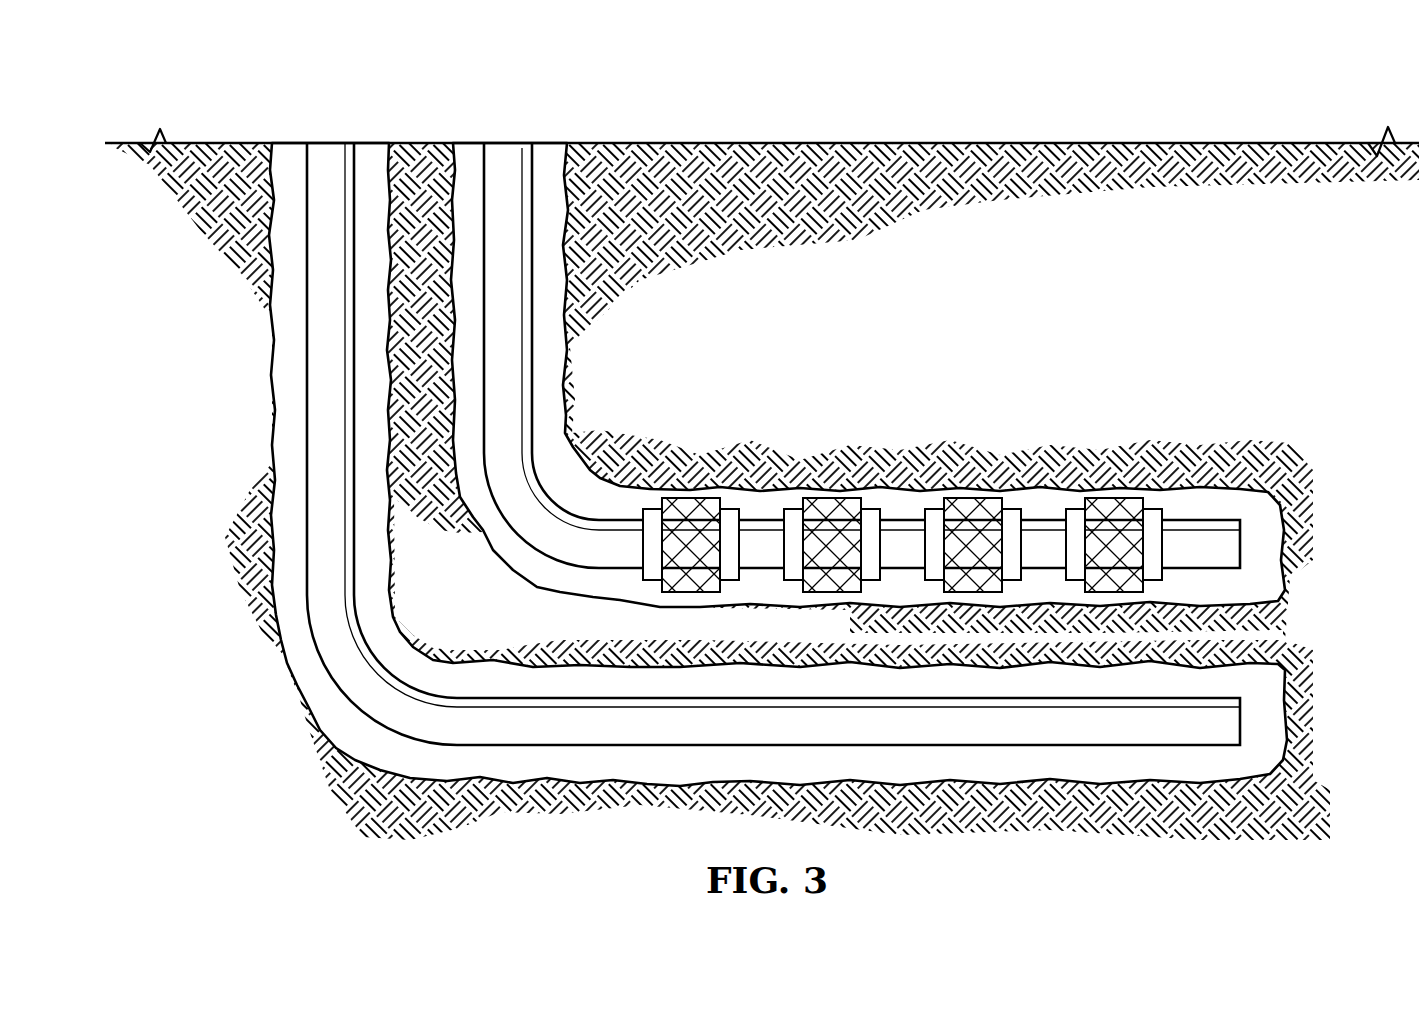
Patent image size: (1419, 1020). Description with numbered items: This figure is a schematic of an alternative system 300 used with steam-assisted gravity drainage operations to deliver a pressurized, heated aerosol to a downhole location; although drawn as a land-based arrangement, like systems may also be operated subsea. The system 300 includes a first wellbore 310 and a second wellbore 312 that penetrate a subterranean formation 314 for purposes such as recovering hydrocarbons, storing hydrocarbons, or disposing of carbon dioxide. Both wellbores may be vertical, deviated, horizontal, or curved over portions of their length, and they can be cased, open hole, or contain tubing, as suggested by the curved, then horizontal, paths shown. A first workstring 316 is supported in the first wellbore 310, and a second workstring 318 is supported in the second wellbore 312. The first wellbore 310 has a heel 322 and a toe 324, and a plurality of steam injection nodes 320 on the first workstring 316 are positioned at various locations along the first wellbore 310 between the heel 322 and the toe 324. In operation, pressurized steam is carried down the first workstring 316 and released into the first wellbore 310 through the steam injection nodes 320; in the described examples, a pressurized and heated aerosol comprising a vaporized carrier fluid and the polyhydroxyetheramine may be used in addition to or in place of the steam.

The system 300 is at (1037, 97).
The first wellbore 310 is at (465, 152).
The second wellbore 312 is at (288, 152).
The subterranean formation 314 is at (1013, 338).
The first workstring 316 is at (531, 158).
The second workstring 318 is at (352, 158).
The steam injection nodes 320 is at (690, 498).
The heel 322 is at (494, 561).
The toe 324 is at (1294, 594).